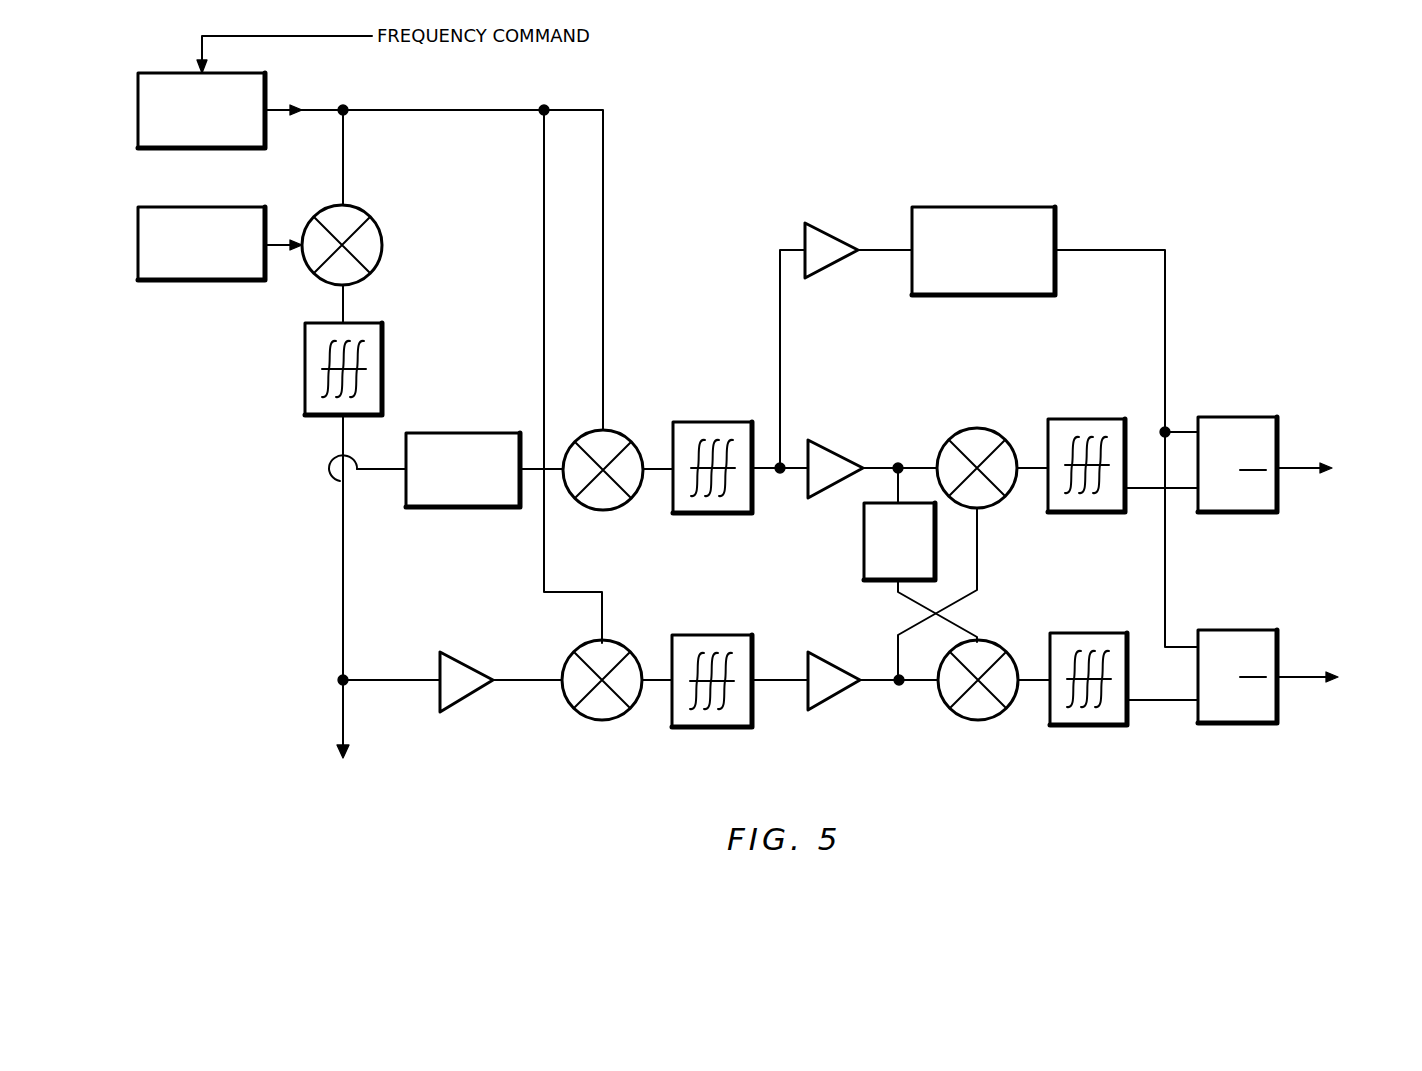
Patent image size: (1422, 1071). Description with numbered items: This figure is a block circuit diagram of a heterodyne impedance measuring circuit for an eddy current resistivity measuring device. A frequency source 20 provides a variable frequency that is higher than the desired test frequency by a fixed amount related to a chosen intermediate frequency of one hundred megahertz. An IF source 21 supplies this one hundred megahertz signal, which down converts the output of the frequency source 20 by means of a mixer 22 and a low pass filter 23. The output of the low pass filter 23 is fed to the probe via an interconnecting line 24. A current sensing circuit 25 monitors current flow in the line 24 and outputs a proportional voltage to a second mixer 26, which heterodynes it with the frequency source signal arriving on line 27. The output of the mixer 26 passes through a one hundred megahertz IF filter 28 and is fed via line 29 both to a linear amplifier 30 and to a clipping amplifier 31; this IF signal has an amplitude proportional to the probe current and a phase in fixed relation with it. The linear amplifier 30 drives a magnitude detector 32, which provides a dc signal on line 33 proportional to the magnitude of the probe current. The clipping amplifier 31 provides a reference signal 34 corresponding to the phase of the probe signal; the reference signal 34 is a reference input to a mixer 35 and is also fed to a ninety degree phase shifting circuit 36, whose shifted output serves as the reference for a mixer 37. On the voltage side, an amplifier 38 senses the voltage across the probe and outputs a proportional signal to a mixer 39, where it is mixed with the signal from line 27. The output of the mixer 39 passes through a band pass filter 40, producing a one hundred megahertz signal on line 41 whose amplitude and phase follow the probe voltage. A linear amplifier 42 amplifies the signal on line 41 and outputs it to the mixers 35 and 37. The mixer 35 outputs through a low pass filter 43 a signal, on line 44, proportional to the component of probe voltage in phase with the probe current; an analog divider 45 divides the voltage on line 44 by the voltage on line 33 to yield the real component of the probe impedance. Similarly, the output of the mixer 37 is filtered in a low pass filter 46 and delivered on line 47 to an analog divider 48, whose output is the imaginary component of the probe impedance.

The frequency source 20 is at (165, 76).
The 100 MHz IF frequency source 21 is at (160, 210).
The mixer 22 is at (350, 217).
The low pass filter 23 is at (368, 328).
The interconnecting line 24 is at (318, 488).
The current sensing circuit 25 is at (423, 501).
The second mixer 26 is at (600, 508).
The frequency source line 27 is at (447, 105).
The 100 MHz IF filter 28 is at (690, 423).
The line 29 is at (779, 340).
The linear amplifier 30 is at (805, 232).
The clipping amplifier 31 is at (830, 483).
The magnitude detector 32 is at (1037, 210).
The line 33 is at (1118, 249).
The reference signal 34 is at (883, 462).
The mixer 35 is at (982, 433).
The 90° phase shifting circuit 36 is at (873, 570).
The mixer 37 is at (972, 713).
The amplifier 38 is at (460, 665).
The mixer 39 is at (593, 715).
The band pass filter 40 is at (697, 642).
The line 41 is at (780, 673).
The linear amplifier 42 is at (822, 670).
The low pass filter 43 is at (1073, 515).
The line 44 is at (1150, 490).
The analog divider 45 is at (1267, 505).
The low pass filter 46 is at (1073, 637).
The line 47 is at (1168, 700).
The analog divider 48 is at (1273, 718).